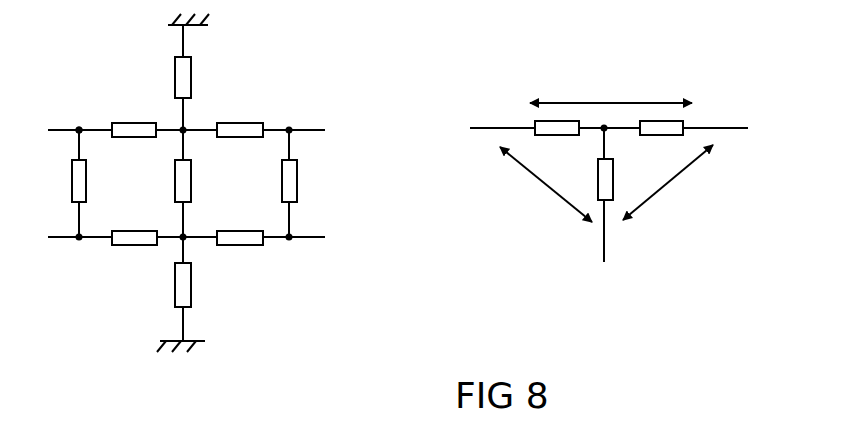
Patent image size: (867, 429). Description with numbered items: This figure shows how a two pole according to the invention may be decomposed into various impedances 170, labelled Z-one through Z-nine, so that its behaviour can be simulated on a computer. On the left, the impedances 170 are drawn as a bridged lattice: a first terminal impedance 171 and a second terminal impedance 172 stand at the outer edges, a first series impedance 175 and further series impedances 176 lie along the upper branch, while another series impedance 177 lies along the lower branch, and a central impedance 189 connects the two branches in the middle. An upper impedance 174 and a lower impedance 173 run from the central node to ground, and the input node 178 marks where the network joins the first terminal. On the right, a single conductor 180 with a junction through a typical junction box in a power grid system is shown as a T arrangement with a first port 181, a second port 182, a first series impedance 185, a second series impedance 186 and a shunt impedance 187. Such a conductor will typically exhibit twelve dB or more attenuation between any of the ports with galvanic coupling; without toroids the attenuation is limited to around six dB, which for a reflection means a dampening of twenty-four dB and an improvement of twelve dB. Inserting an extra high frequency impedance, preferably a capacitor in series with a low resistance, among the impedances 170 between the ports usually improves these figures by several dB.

The impedances 170 is at (263, 322).
The first terminal impedance Z1 171 is at (68, 204).
The second terminal impedance Z2 172 is at (298, 190).
The impedance Z7 to ground 173 is at (173, 279).
The impedance Z8 to ground 174 is at (175, 55).
The series impedance Z3 175 is at (130, 118).
The series impedances Z4 and Z5 176 is at (246, 122).
The series impedance Z6 177 is at (265, 252).
The input node 178 is at (72, 120).
The central impedance Zg 189 is at (172, 190).
The single conductor 180 is at (692, 322).
The first port Z1 181 is at (478, 136).
The second port Z2 182 is at (748, 136).
The series impedance Z11 185 is at (528, 121).
The series impedance Z22 186 is at (683, 114).
The shunt impedance Z33 187 is at (593, 195).